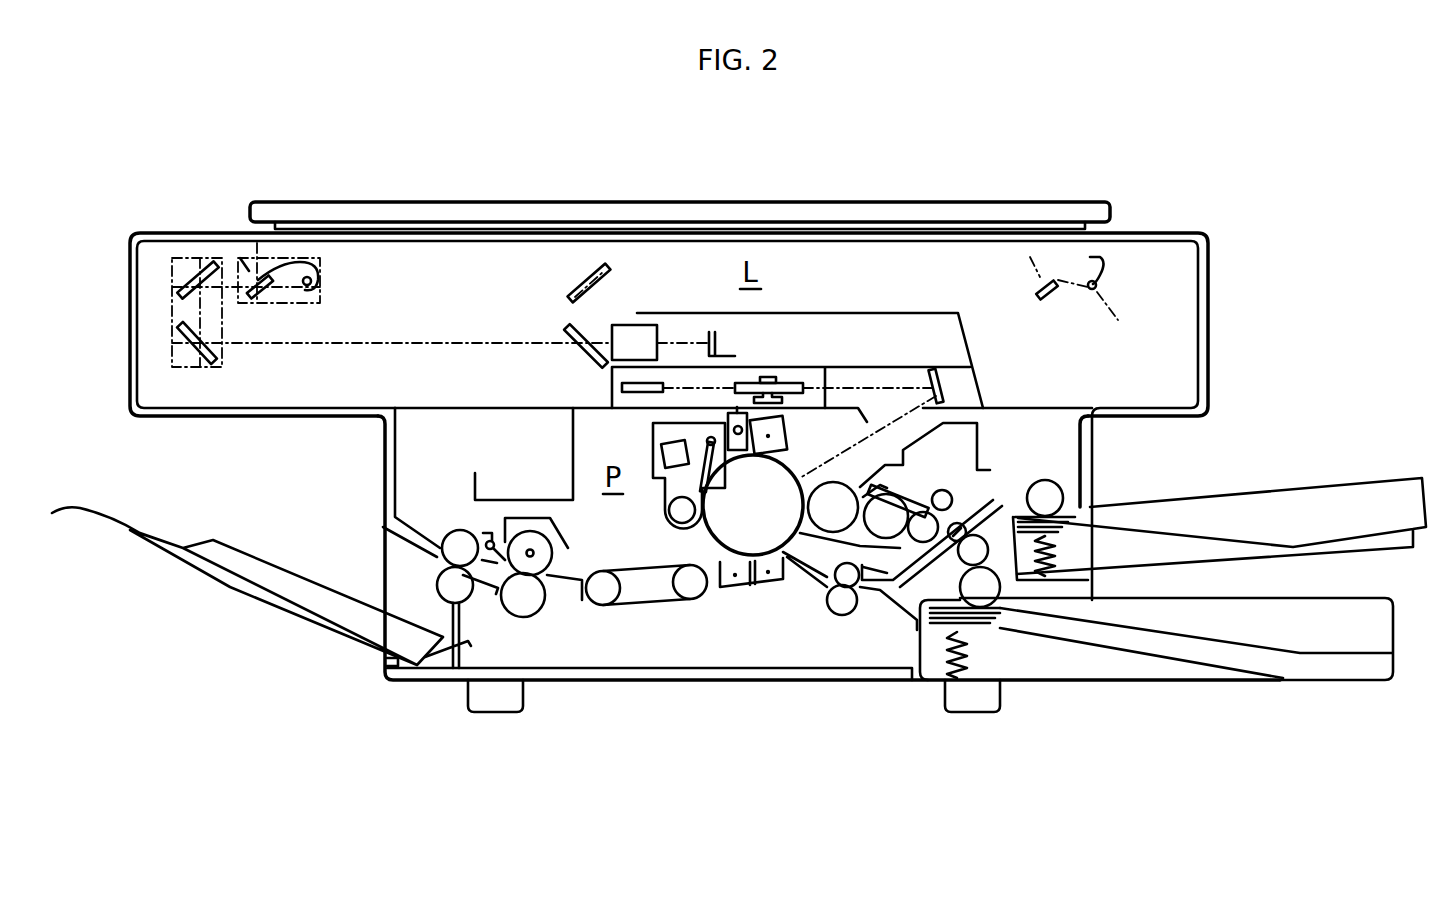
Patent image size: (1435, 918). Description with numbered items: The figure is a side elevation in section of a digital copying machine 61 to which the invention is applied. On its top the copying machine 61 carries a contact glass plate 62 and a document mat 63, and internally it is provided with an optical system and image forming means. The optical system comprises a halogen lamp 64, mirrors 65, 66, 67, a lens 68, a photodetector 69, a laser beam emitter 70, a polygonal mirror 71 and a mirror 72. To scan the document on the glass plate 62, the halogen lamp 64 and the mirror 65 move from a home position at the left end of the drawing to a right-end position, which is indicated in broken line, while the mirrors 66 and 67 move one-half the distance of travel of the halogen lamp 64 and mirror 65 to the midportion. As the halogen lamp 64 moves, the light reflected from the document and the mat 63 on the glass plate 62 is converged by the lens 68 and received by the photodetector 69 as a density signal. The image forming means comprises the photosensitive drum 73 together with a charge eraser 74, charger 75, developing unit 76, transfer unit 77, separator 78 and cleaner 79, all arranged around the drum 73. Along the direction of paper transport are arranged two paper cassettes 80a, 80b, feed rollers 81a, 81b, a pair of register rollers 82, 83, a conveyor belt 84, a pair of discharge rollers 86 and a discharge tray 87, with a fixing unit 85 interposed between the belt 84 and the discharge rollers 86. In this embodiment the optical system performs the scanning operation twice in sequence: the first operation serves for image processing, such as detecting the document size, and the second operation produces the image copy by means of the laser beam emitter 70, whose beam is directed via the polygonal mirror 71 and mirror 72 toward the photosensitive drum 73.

The copying machine 61 is at (705, 406).
The contact glass plate 62 is at (466, 243).
The document mat 63 is at (354, 226).
The halogen lamp 64 is at (312, 281).
The mirror 65 is at (258, 298).
The mirror 66 is at (175, 286).
The mirror 67 is at (206, 331).
The lens 68 is at (626, 325).
The photodetector 69 is at (716, 344).
The laser beam emitter 70 is at (612, 385).
The polygonal mirror 71 is at (798, 383).
The mirror 72 is at (941, 387).
The photosensitive drum 73 is at (753, 505).
The charge eraser 74 is at (727, 414).
The charger 75 is at (786, 441).
The developing unit 76 is at (915, 483).
The transfer unit 77 is at (770, 586).
The separator 78 is at (735, 588).
The cleaner 79 is at (657, 505).
The paper cassette 80a is at (1230, 496).
The paper cassette 80b is at (1232, 598).
The feed roller 81a is at (1067, 512).
The feed roller 81b is at (1090, 594).
The register roller 82 is at (963, 529).
The register roller 83 is at (846, 614).
The conveyor belt 84 is at (640, 604).
The fixing unit 85 is at (566, 541).
The discharge rollers 86 is at (445, 583).
The discharge tray 87 is at (322, 586).